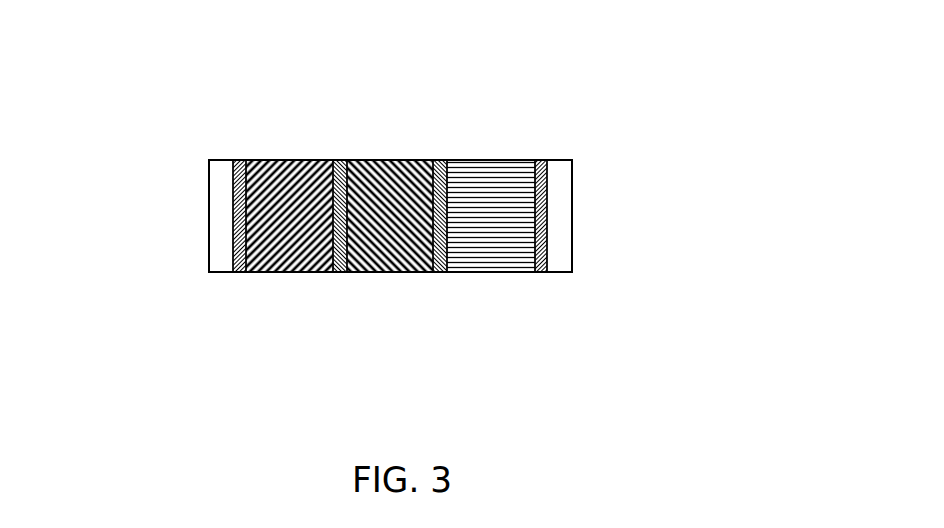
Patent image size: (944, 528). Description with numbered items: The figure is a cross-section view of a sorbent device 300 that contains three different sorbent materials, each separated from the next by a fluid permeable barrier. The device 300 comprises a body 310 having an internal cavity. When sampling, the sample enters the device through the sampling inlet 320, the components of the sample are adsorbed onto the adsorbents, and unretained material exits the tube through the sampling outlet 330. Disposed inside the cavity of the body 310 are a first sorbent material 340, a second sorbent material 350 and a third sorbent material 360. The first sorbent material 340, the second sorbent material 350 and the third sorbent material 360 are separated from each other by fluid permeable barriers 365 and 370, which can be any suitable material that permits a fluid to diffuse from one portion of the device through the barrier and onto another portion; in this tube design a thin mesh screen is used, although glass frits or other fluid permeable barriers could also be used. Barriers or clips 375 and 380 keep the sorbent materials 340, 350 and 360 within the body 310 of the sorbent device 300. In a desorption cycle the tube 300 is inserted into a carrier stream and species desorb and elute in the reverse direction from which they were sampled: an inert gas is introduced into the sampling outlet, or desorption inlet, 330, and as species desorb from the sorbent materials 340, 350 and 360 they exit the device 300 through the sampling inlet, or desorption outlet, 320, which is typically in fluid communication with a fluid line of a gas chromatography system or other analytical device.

The sorbent device 300 is at (190, 343).
The body 310 is at (222, 158).
The sampling inlet 320 is at (208, 210).
The sampling outlet 330 is at (573, 223).
The first sorbent material 340 is at (272, 260).
The second sorbent material 350 is at (385, 260).
The third sorbent material 360 is at (485, 260).
The fluid permeable barrier 365 is at (337, 158).
The fluid permeable barrier 370 is at (440, 158).
The barrier or clip 375 is at (243, 158).
The barrier or clip 380 is at (540, 158).